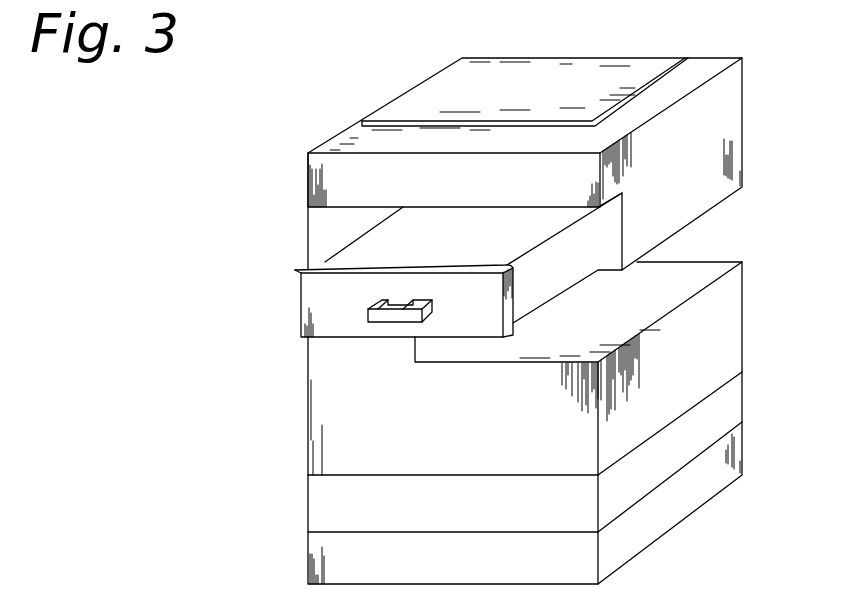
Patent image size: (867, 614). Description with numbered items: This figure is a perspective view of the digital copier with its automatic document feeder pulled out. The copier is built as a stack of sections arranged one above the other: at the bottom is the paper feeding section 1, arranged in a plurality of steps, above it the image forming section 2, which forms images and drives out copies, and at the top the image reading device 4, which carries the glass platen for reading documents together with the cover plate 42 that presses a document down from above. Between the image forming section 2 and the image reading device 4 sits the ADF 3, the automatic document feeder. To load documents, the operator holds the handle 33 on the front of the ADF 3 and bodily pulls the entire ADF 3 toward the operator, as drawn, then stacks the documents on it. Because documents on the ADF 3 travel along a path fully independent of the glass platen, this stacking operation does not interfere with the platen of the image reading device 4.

The paper feeding section 1 is at (762, 440).
The image forming section 2 is at (762, 322).
The ADF 3 is at (293, 301).
The handle 33 is at (382, 321).
The image reading device 4 is at (760, 102).
The cover plate 42 is at (540, 72).